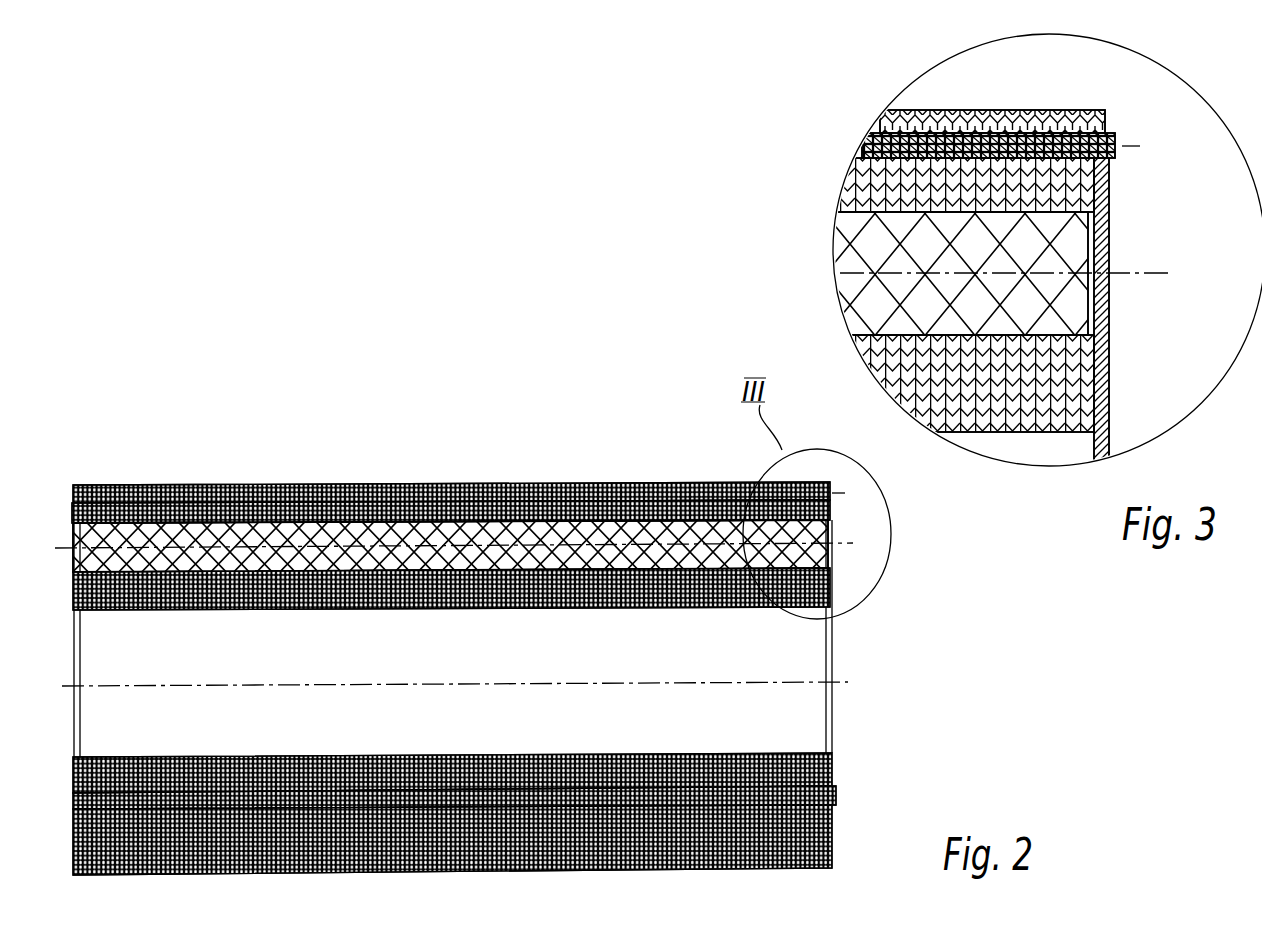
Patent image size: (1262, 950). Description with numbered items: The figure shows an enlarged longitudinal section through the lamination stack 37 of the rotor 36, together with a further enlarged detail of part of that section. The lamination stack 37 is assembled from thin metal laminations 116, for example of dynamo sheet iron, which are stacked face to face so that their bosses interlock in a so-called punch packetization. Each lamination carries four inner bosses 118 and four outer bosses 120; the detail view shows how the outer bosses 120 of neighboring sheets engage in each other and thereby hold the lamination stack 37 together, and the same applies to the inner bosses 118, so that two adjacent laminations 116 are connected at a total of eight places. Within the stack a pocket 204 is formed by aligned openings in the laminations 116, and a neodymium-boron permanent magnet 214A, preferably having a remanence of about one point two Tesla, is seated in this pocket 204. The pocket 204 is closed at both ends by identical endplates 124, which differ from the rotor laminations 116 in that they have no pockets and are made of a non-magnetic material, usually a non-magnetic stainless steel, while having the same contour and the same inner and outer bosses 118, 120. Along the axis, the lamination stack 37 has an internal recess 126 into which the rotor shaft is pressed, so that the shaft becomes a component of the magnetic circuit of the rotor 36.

In FIG. 2, the rotor 36 is at (520, 468).
In FIG. 2, the lamination stack 37 is at (287, 484).
In FIG. 3, the lamination stack 37 is at (832, 173).
In FIG. 3, the metal lamination 116 is at (978, 110).
In FIG. 2, the inner boss 118 is at (837, 795).
In FIG. 3, the outer boss 120 is at (1049, 140).
In FIG. 2, the endplate 124 is at (55, 525).
In FIG. 3, the endplate 124 is at (1102, 220).
In FIG. 2, the internal recess 126 is at (793, 752).
In FIG. 3, the internal recess 126 is at (1078, 447).
In FIG. 2, the pocket 204 is at (834, 523).
In FIG. 3, the pocket 204 is at (843, 228).
In FIG. 2, the permanent magnet 214A is at (410, 540).
In FIG. 3, the permanent magnet 214A is at (848, 244).